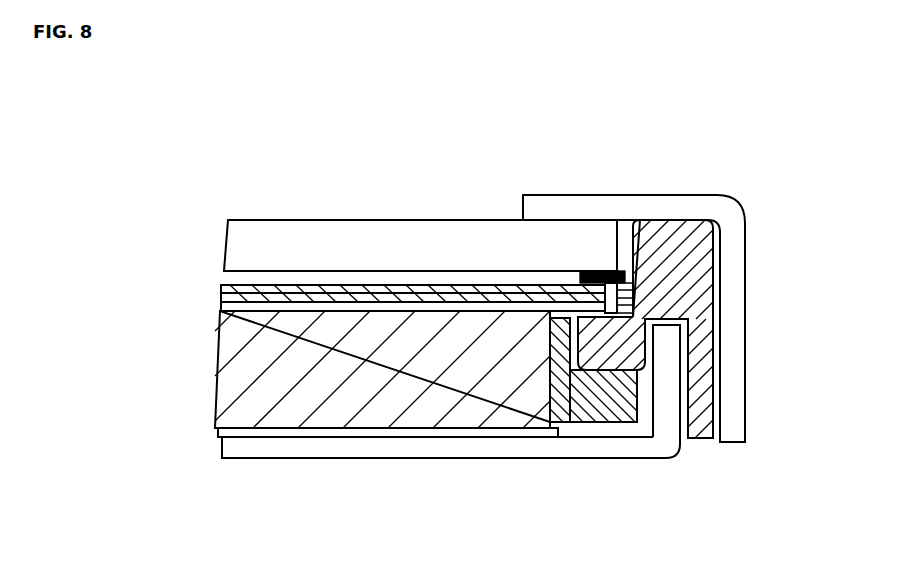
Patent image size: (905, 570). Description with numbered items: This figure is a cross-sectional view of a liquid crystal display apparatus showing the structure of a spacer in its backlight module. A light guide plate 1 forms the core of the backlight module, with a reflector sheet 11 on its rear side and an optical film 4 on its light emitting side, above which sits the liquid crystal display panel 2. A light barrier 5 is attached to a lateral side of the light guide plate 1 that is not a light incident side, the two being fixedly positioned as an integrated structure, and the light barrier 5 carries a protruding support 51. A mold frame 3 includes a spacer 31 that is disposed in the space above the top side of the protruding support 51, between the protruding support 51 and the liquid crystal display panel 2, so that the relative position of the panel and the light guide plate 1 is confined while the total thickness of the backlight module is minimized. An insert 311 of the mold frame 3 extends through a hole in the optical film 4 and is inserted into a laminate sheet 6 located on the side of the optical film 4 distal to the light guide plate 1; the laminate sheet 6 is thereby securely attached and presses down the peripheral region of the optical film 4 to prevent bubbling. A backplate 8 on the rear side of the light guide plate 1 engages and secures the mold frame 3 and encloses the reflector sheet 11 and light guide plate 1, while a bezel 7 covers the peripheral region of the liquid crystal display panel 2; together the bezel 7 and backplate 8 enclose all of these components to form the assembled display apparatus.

The light guide plate 1 is at (238, 378).
The reflector sheet 11 is at (235, 433).
The liquid crystal display panel 2 is at (240, 243).
The mold frame 3 is at (680, 260).
The spacer 31 is at (620, 342).
The insert 311 is at (600, 268).
The optical film 4 is at (240, 298).
The light barrier 5 is at (558, 400).
The protruding support 51 is at (612, 395).
The laminate sheet 6 is at (580, 272).
The bezel 7 is at (541, 204).
The backplate 8 is at (243, 452).